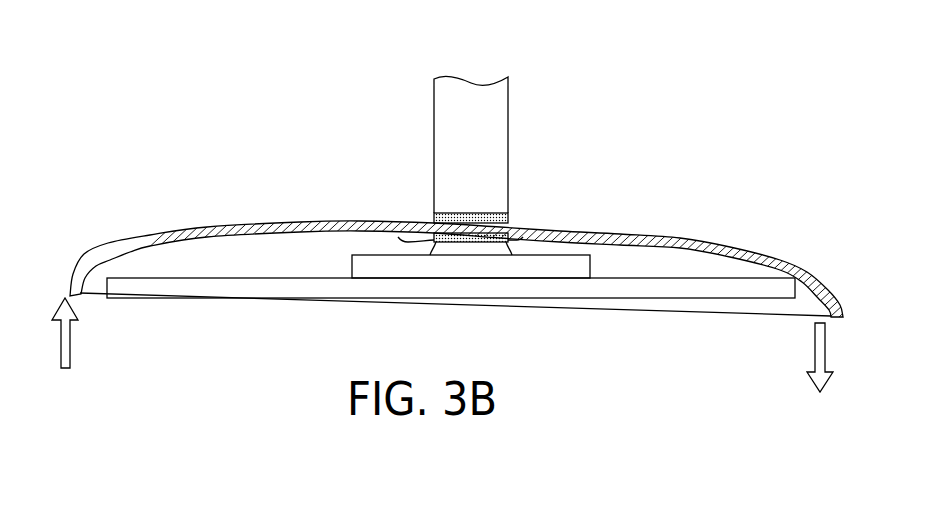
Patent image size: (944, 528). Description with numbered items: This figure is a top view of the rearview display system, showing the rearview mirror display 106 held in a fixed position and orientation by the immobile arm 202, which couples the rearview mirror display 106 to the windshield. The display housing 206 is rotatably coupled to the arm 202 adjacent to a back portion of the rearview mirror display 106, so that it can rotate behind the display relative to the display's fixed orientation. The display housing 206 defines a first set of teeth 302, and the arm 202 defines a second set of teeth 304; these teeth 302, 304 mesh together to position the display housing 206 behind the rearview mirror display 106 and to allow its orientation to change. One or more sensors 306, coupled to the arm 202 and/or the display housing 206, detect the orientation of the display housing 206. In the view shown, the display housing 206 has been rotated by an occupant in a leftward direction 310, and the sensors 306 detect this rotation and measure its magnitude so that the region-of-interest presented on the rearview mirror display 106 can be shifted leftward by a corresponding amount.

The rearview mirror display 106 is at (198, 289).
The arm 202 is at (489, 111).
The display housing 206 is at (97, 256).
The teeth 302 is at (470, 213).
The teeth 304 is at (422, 213).
The sensors 306 is at (398, 237).
The leftward direction 310 is at (70, 344).